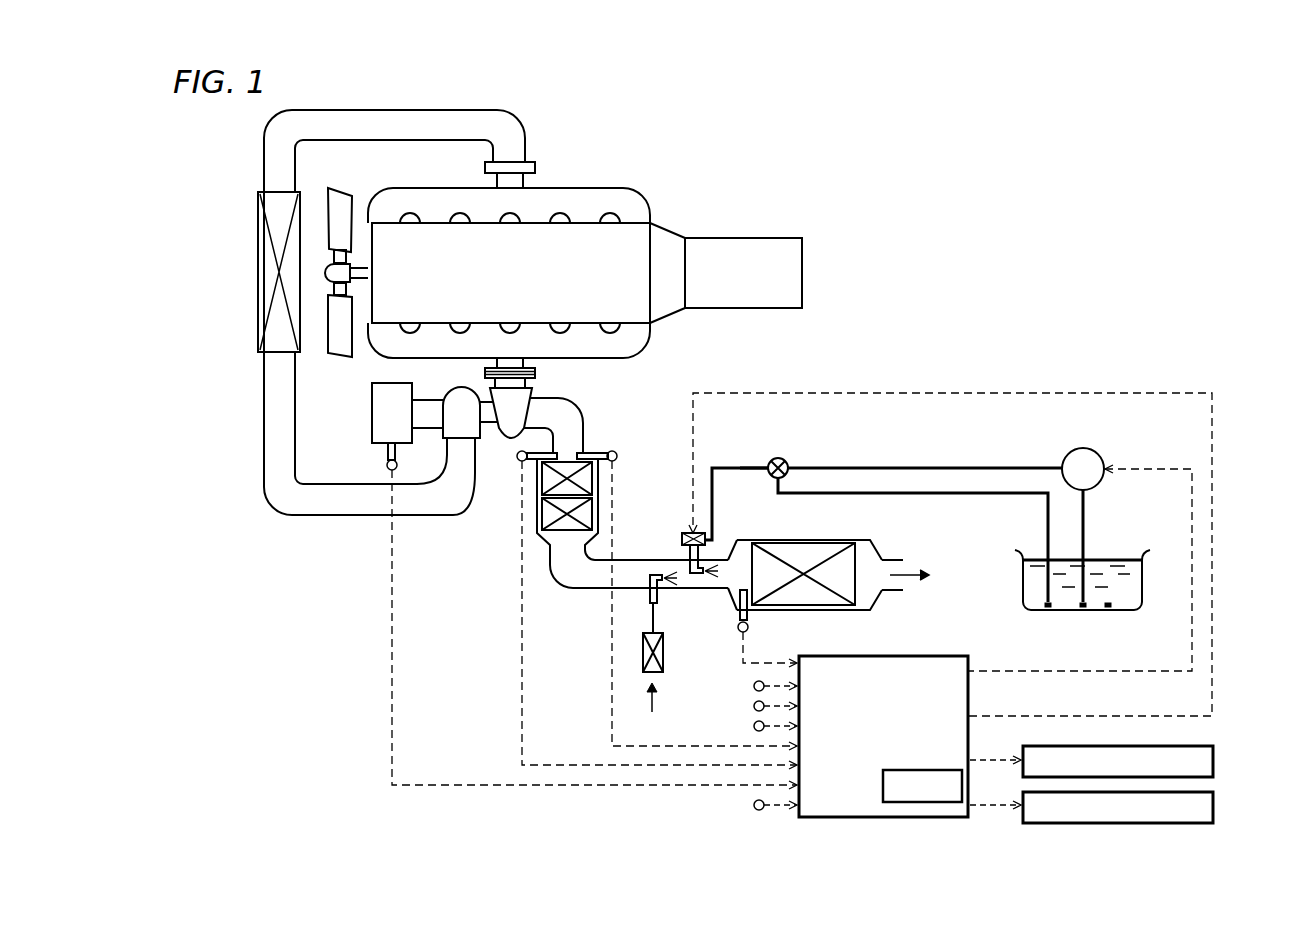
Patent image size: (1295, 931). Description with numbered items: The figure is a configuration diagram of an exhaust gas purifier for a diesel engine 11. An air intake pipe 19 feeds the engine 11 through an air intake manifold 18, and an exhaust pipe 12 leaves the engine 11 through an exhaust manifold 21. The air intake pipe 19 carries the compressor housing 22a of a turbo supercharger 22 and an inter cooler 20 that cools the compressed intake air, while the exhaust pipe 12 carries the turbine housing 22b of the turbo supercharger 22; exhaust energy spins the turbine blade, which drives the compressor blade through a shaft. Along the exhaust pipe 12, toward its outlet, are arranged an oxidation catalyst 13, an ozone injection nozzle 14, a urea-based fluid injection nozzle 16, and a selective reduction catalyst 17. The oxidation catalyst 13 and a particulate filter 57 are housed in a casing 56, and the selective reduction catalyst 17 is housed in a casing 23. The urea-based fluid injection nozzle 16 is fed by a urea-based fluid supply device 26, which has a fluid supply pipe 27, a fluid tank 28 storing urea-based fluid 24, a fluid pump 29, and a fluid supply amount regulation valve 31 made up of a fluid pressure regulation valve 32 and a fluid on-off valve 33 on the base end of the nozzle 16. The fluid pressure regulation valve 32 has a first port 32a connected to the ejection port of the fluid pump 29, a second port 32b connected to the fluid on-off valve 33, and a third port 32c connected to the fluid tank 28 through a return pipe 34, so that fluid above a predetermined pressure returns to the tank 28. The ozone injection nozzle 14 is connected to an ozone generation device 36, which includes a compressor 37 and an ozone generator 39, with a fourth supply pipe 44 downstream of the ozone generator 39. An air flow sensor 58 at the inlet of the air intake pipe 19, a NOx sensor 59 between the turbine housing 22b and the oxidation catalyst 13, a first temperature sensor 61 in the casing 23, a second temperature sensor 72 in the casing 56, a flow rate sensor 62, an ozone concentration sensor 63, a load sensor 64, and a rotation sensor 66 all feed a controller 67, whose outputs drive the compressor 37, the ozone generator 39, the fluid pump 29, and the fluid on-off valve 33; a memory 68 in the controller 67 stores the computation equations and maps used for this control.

The diesel engine 11 is at (526, 284).
The exhaust pipe 12 is at (567, 400).
The oxidation catalyst 13 is at (588, 448).
The ozone injection nozzle 14 is at (648, 583).
The urea-based fluid injection nozzle 16 is at (698, 578).
The selective reduction catalyst 17 is at (787, 553).
The air intake manifold 18 is at (435, 186).
The air intake pipe 19 is at (388, 109).
The inter cooler 20 is at (256, 272).
The exhaust manifold 21 is at (652, 342).
The turbo supercharger 22 is at (455, 492).
The compressor housing 22a is at (458, 432).
The turbine housing 22b is at (512, 450).
The casing 23 is at (853, 542).
The urea-based fluid 24 is at (1110, 560).
The urea-based fluid supply device 26 is at (1088, 616).
The fluid supply pipe 27 is at (923, 467).
The fluid tank 28 is at (1022, 590).
The fluid pump 29 is at (1105, 482).
The fluid supply amount regulation valve 31 is at (690, 530).
The fluid pressure regulation valve 32 is at (771, 468).
The first port 32a is at (788, 462).
The second port 32b is at (768, 466).
The third port 32c is at (777, 480).
The fluid on-off valve 33 is at (682, 538).
The return pipe 34 is at (908, 495).
The ozone generation device 36 is at (666, 652).
The compressor 37 is at (1213, 803).
The ozone generator 39 is at (1213, 757).
The fourth supply pipe 44 is at (648, 618).
The casing 56 is at (547, 545).
The particulate filter 57 is at (565, 532).
The air flow sensor 58 is at (387, 464).
The NOx sensor 59 is at (512, 425).
The first temperature sensor 61 is at (753, 625).
The flow rate sensor 62 is at (753, 685).
The ozone concentration sensor 63 is at (753, 705).
The load sensor 64 is at (753, 725).
The rotation sensor 66 is at (753, 805).
The controller 67 is at (833, 817).
The memory 68 is at (913, 802).
The second temperature sensor 72 is at (615, 452).